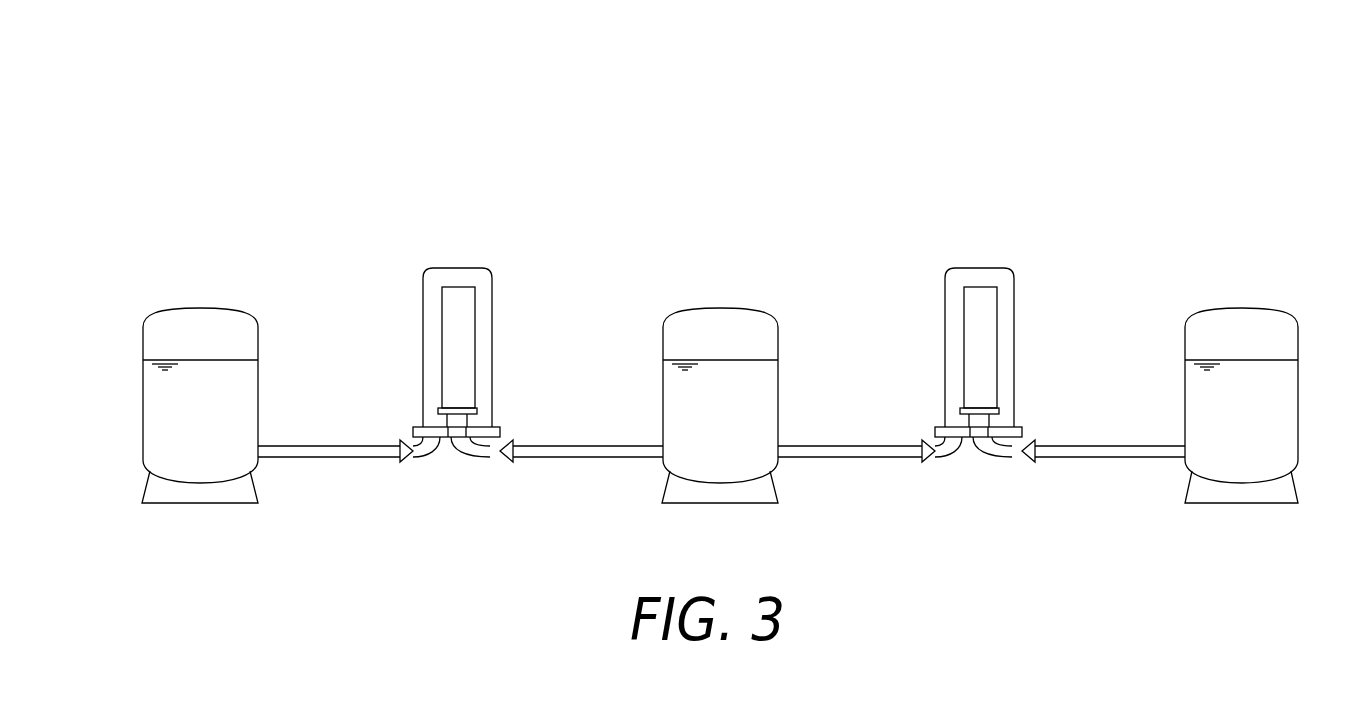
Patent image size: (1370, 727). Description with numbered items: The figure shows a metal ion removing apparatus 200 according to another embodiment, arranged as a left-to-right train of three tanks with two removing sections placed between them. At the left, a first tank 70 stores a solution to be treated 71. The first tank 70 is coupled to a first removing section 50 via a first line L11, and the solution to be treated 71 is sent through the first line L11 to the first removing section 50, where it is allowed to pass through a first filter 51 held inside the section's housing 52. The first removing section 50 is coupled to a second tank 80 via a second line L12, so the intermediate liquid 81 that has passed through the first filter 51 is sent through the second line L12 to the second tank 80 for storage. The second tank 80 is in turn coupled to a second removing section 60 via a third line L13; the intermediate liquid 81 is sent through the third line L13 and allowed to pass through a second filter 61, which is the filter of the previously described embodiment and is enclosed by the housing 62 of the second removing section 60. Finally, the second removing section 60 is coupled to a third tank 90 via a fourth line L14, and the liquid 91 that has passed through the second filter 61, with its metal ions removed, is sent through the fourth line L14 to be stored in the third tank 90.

The metal ion removing apparatus 200 is at (878, 105).
The first tank 70 is at (202, 307).
The solution to be treated 71 is at (158, 402).
The second tank 80 is at (719, 307).
The intermediate liquid 81 is at (760, 392).
The third tank 90 is at (1240, 307).
The liquid 91 is at (1280, 392).
The first removing section 50 is at (457, 268).
The first filter 51 is at (455, 344).
The first filter housing 52 is at (482, 312).
The second removing section 60 is at (977, 268).
The second filter 61 is at (977, 344).
The second filter housing 62 is at (1004, 312).
The first line L11 is at (335, 458).
The second line L12 is at (583, 458).
The third line L13 is at (858, 458).
The fourth line L14 is at (1108, 458).